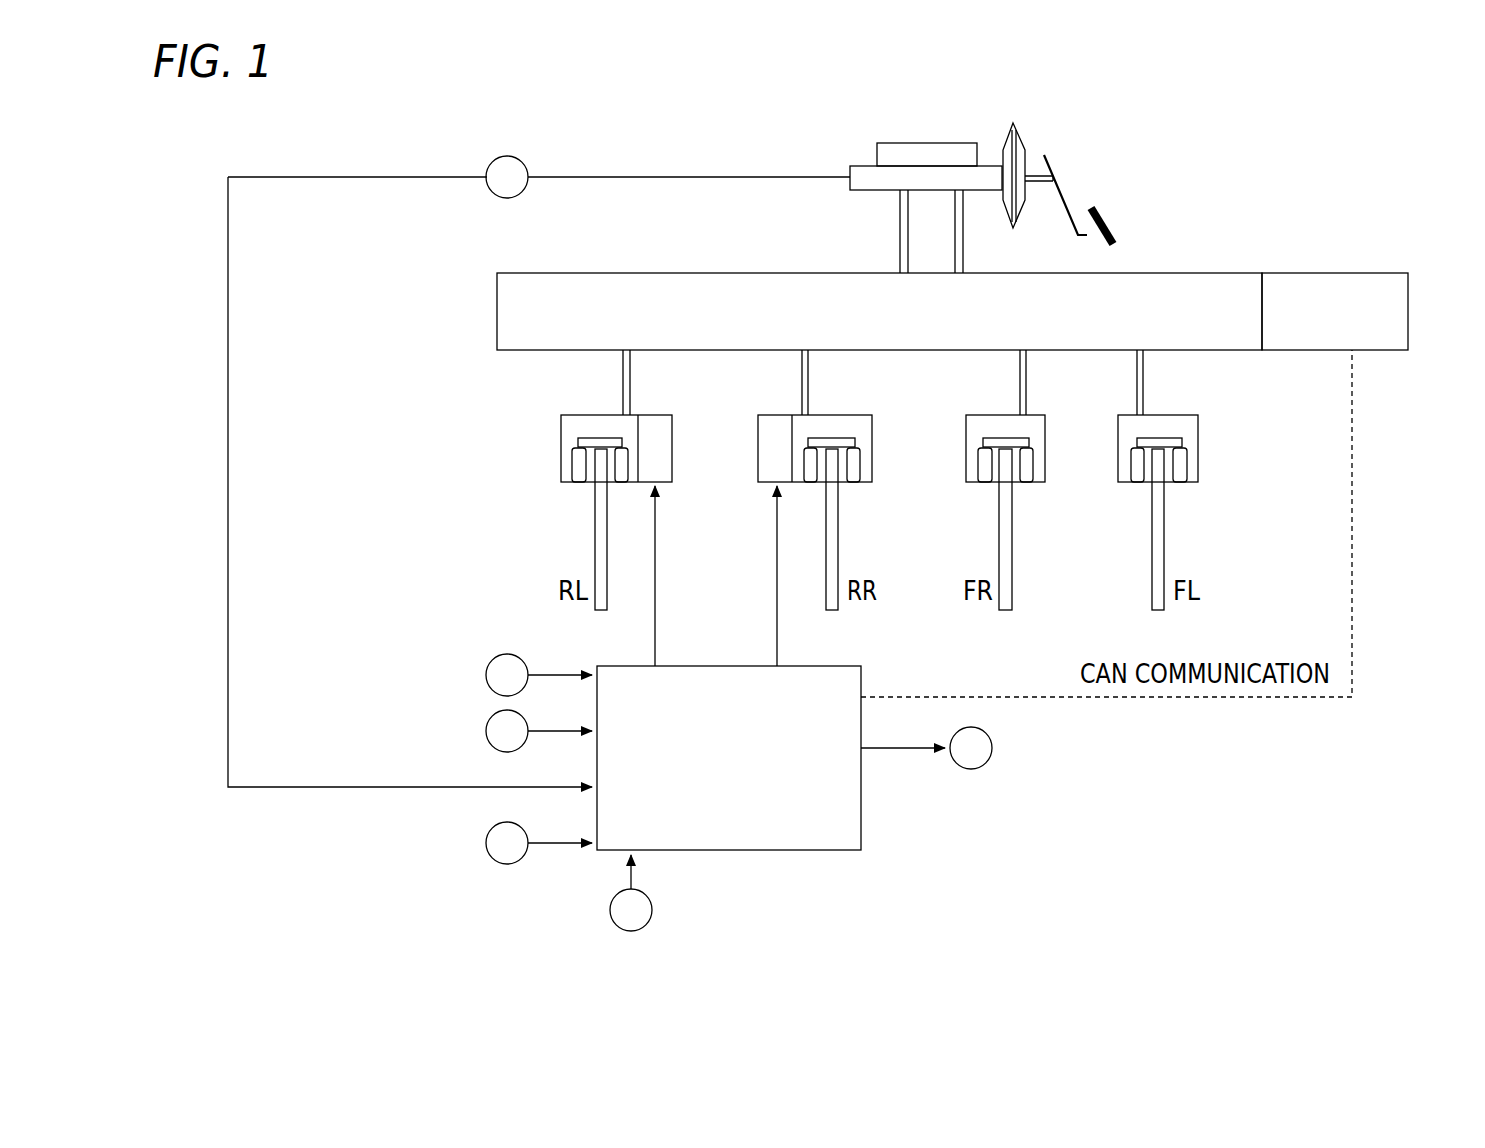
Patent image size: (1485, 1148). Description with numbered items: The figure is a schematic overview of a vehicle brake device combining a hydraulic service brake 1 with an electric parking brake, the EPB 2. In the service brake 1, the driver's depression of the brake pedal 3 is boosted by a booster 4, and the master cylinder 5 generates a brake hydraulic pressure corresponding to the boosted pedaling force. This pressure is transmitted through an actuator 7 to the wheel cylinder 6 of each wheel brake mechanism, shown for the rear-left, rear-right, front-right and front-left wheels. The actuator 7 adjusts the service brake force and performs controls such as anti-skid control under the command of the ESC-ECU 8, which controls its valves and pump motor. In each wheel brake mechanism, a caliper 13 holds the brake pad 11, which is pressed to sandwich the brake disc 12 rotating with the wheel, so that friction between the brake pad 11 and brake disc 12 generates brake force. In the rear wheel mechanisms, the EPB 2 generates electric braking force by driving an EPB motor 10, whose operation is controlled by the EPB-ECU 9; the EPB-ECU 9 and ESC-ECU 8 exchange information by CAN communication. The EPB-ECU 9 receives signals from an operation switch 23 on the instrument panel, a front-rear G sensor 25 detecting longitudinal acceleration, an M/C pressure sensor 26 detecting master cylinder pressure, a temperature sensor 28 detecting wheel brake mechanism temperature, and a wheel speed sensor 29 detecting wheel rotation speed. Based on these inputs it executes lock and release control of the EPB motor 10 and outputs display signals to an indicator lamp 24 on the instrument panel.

The service brake 1 is at (1090, 156).
The EPB 2 is at (675, 535).
The brake pedal 3 is at (1102, 216).
The booster 4 is at (1020, 142).
The master cylinder 5 is at (863, 166).
The wheel cylinder 6 is at (631, 412).
The actuator 7 is at (1182, 273).
The ESC-ECU 8 is at (1340, 273).
The EPB-ECU 9 is at (800, 851).
The EPB motor 10 is at (673, 425).
The brake pad 11 is at (581, 484).
The brake disc 12 is at (595, 532).
The caliper 13 is at (588, 411).
The operation switch 23 is at (486, 674).
The indicator lamp 24 is at (992, 746).
The front-rear G sensor 25 is at (486, 730).
The M/C pressure sensor 26 is at (507, 156).
The temperature sensor 28 is at (486, 842).
The wheel speed sensor 29 is at (652, 910).